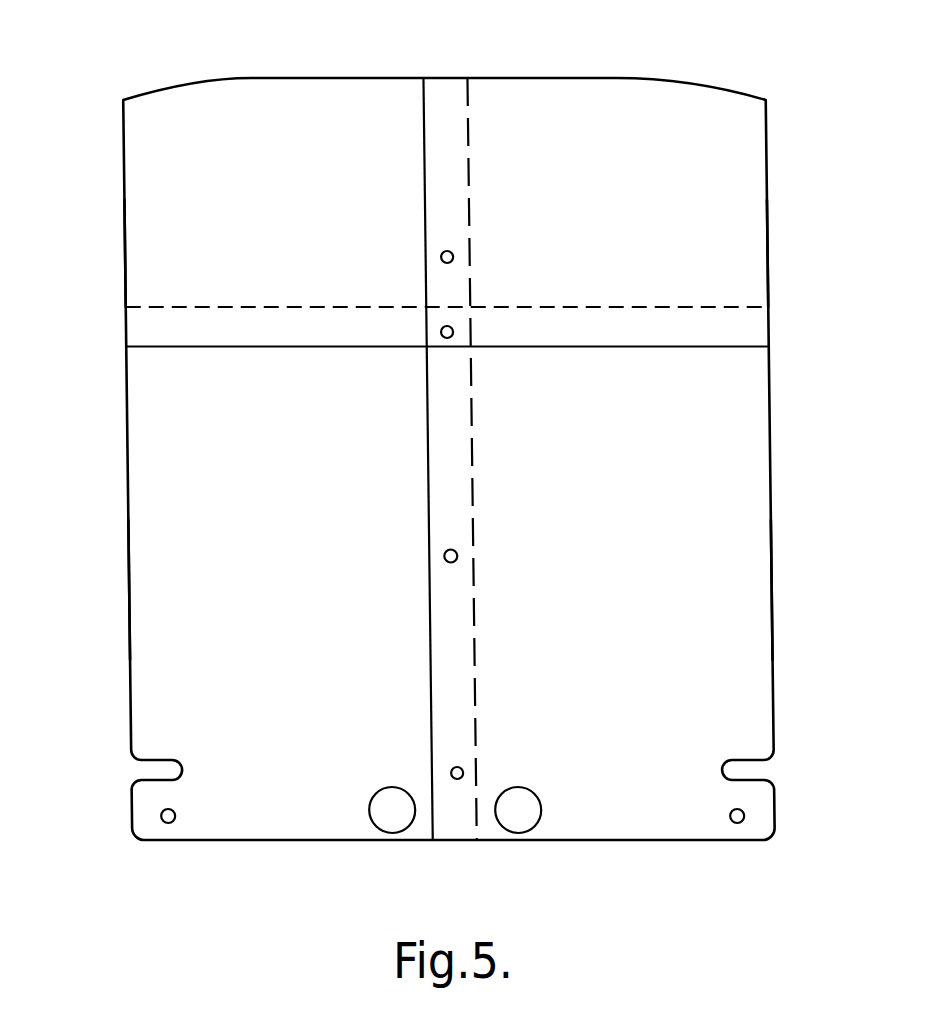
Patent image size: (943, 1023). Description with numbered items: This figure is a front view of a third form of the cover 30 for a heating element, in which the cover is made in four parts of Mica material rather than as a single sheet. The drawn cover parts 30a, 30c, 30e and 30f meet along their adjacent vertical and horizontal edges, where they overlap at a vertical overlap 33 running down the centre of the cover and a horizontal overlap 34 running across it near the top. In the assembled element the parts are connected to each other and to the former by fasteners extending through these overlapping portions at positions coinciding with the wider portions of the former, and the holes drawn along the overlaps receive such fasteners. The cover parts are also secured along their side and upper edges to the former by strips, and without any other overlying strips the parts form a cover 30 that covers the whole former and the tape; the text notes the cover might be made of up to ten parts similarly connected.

The cover 30 is at (290, 880).
The cover part 30a is at (136, 270).
The cover part 30c is at (148, 583).
The cover part 30e is at (748, 605).
The cover part 30f is at (742, 272).
The vertical overlap 33 is at (448, 97).
The horizontal overlap 34 is at (747, 330).